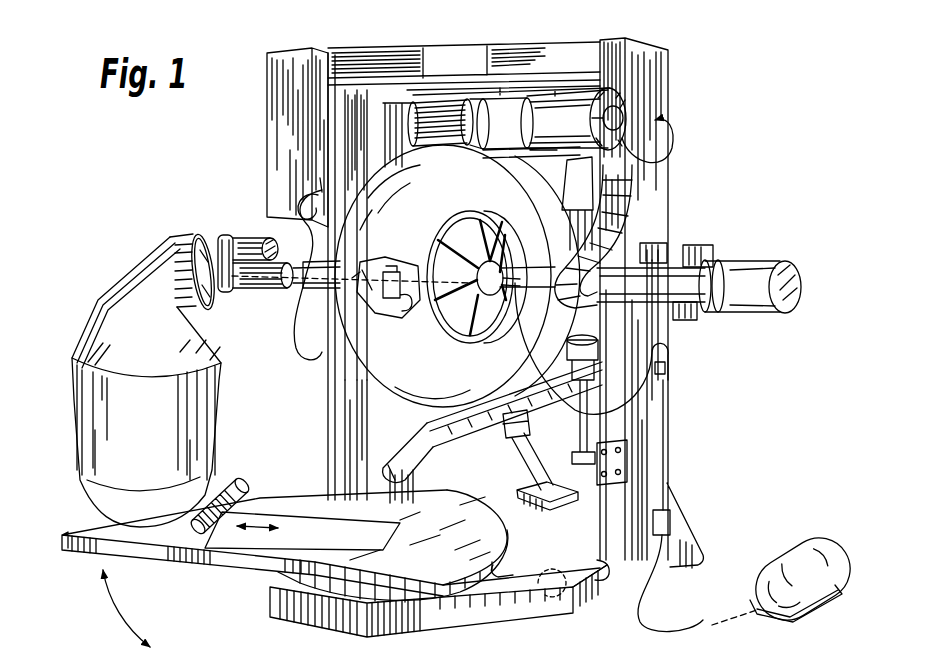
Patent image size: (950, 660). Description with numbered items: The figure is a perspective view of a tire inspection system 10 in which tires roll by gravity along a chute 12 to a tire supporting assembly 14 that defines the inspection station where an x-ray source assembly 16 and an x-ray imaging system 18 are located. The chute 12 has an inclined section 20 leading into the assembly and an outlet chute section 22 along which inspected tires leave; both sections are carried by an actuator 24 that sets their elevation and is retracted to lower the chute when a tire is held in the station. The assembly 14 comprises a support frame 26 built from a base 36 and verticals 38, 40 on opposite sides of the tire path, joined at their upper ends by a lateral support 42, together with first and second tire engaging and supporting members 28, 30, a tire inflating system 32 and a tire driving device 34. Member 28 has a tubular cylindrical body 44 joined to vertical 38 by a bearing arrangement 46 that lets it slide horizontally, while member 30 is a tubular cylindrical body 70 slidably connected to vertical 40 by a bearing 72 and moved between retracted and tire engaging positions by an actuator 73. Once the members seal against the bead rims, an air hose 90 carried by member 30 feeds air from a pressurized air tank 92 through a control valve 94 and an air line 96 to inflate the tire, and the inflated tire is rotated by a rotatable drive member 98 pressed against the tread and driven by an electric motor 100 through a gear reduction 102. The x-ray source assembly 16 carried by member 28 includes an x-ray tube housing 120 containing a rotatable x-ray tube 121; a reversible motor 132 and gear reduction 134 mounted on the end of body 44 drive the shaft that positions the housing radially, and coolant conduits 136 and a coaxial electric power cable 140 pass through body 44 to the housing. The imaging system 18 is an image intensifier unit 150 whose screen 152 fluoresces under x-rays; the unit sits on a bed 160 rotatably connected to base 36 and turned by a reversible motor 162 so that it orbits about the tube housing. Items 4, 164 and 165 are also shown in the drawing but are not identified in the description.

The section line 4 is at (545, 268).
The system 10 is at (730, 127).
The chute 12 is at (410, 427).
The tire supporting assembly 14 is at (674, 367).
The x-ray source assembly 16 is at (388, 322).
The x-ray imaging system 18 is at (84, 327).
The inclined section 20 is at (466, 430).
The outlet chute section 22 is at (408, 452).
The actuator 24 is at (530, 468).
The support frame 26 is at (676, 213).
The first tire engaging and supporting member 28 is at (271, 297).
The second tire engaging and supporting member 30 is at (540, 266).
The tire inflating system 32 is at (750, 473).
The tire driving device 34 is at (527, 98).
The base 36 is at (507, 617).
The vertical 38 is at (340, 400).
The vertical 40 is at (663, 333).
The lateral support 42 is at (514, 50).
The tubular cylindrical body 44 is at (252, 248).
The bearing arrangement 46 is at (337, 222).
The tubular cylindrical body 70 is at (567, 240).
The bearing 72 is at (606, 279).
The actuator 73 is at (677, 282).
The air hose 90 is at (570, 411).
The pressurized air tank 92 is at (815, 548).
The control valve 94 is at (668, 522).
The air line 96 is at (670, 552).
The rotatable drive member 98 is at (437, 110).
The electric motor 100 is at (578, 125).
The gear reduction 102 is at (499, 135).
The x-ray tube housing 120 is at (353, 277).
The rotatable x-ray tube 121 is at (407, 268).
The reversible motor 132 is at (259, 240).
The gear reduction 134 is at (221, 284).
The coolant conduits 136 is at (293, 357).
The coaxial electric power cable 140 is at (322, 202).
The unit 150 is at (107, 417).
The screen 152 is at (200, 250).
The bed 160 is at (250, 563).
The reversible motor 162 is at (545, 598).
The turntable 164 is at (323, 520).
The support roller 165 is at (222, 478).